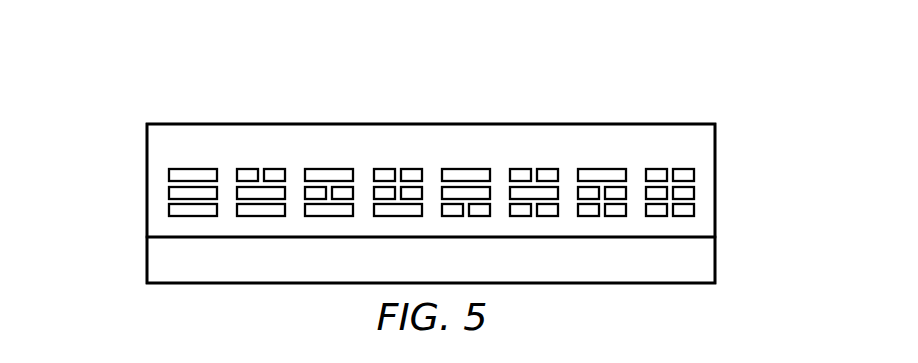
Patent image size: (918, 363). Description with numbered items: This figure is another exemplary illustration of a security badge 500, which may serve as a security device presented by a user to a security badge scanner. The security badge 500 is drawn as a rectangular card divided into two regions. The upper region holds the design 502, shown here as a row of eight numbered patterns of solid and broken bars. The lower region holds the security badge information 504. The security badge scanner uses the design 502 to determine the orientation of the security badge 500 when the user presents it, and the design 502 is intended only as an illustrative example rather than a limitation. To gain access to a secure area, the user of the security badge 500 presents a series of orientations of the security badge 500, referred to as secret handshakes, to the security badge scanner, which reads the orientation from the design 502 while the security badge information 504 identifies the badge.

The security badge 500 is at (117, 177).
The design 502 is at (716, 170).
The security badge information 504 is at (716, 258).